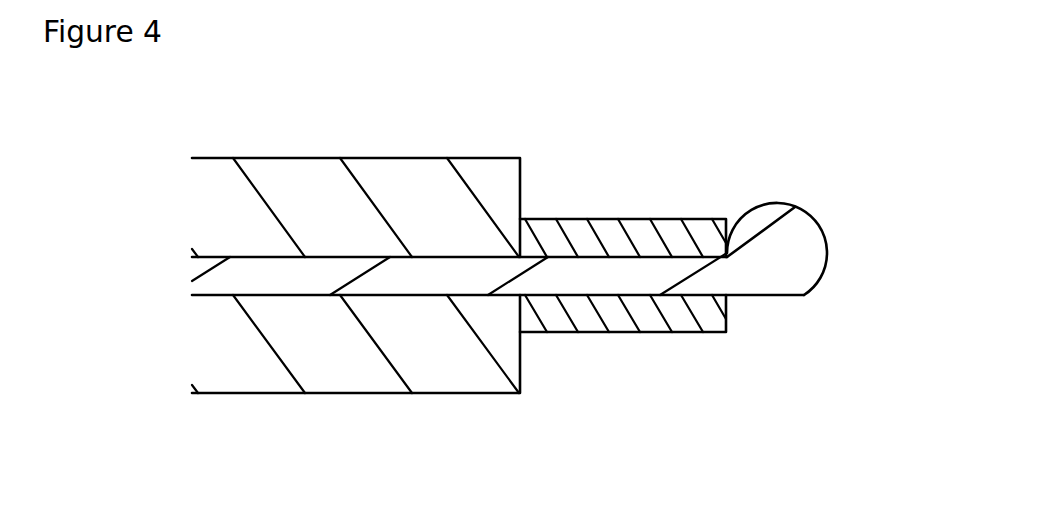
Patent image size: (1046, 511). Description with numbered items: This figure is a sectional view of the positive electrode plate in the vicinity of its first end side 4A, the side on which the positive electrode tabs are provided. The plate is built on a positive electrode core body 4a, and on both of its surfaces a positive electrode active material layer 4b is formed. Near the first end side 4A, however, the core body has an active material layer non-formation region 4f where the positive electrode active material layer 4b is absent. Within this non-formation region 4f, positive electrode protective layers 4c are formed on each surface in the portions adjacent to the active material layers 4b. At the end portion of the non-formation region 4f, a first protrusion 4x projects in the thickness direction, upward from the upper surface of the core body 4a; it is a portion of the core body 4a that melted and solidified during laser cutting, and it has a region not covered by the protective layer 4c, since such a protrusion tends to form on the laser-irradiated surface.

The positive electrode core body 4a is at (263, 282).
The positive electrode active material layer 4b is at (410, 197).
The positive electrode protective layer 4c is at (638, 242).
The active material layer non-formation region 4f is at (575, 283).
The first protrusion 4x is at (777, 230).
The first end side 4A is at (841, 210).